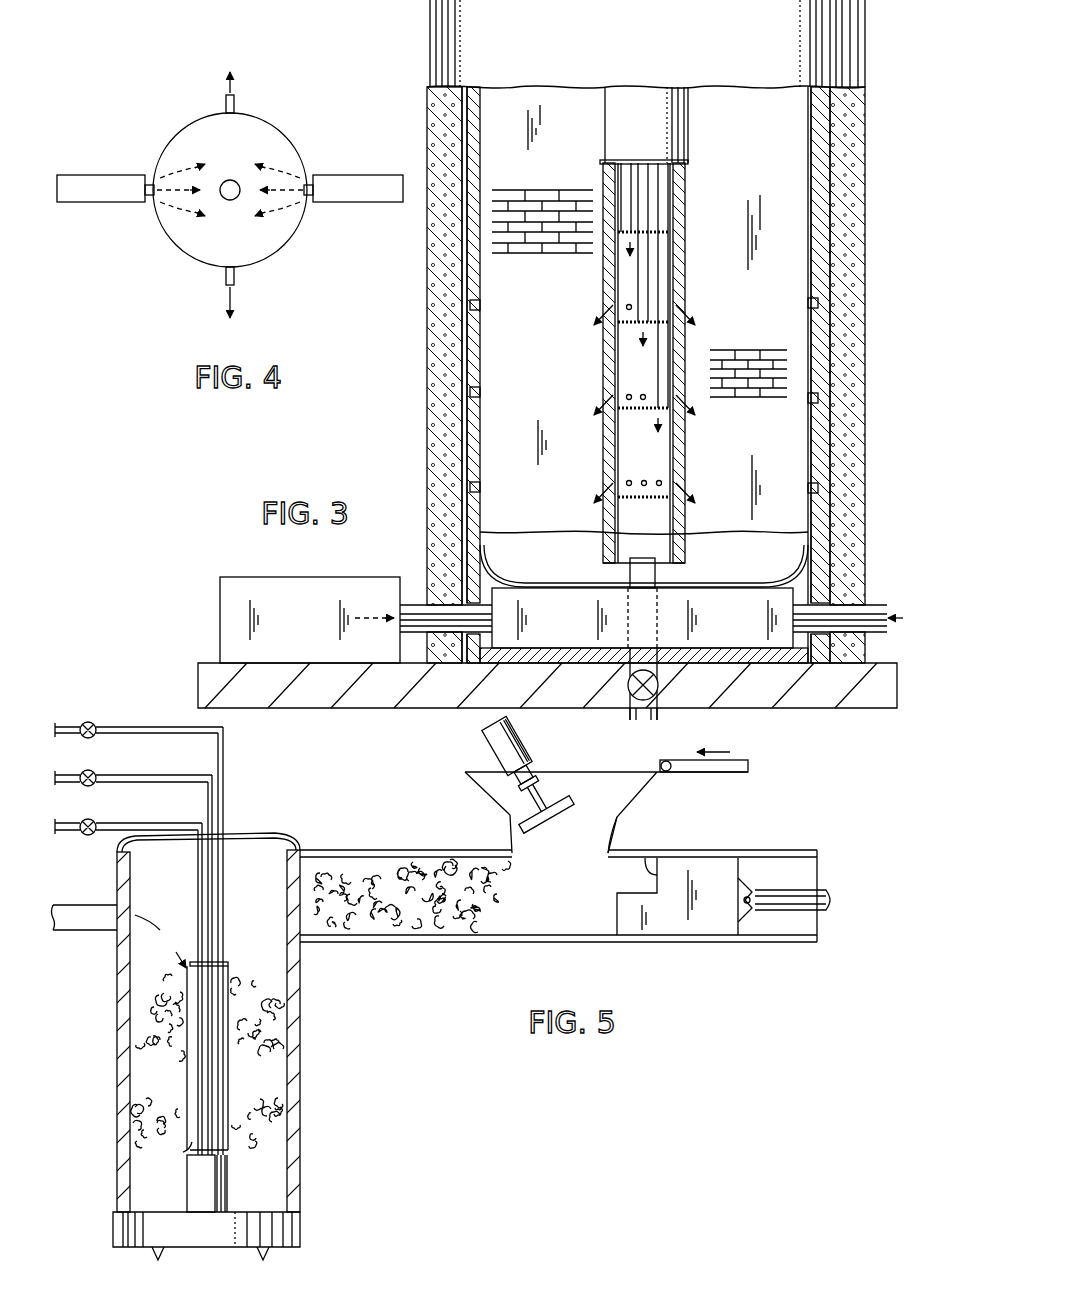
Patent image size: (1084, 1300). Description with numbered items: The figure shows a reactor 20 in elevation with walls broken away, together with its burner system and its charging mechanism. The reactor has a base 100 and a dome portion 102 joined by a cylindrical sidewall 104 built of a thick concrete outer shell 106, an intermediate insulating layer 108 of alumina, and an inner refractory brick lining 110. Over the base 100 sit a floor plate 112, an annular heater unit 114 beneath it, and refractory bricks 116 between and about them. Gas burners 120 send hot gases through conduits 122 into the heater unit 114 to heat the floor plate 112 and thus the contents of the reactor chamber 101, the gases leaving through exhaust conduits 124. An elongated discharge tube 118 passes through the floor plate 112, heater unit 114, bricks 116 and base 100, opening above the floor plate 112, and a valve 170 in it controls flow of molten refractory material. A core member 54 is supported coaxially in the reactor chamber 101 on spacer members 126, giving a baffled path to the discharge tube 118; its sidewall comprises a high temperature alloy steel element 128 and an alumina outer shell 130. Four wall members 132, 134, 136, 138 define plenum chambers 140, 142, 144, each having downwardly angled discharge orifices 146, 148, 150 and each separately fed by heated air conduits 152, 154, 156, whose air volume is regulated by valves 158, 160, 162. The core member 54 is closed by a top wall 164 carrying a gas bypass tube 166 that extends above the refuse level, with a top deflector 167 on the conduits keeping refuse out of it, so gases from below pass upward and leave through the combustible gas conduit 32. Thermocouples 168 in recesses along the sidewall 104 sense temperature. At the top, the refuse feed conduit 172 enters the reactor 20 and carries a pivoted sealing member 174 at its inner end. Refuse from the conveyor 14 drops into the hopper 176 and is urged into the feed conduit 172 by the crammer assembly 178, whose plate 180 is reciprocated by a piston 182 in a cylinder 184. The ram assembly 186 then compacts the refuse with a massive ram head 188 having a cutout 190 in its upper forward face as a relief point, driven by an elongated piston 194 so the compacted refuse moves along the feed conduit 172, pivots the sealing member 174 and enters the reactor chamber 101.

In FIG. 5, the conveyor 14 is at (733, 773).
In FIG. 3, the reactor 20 is at (872, 31).
In FIG. 5, the reactor 20 is at (302, 1011).
In FIG. 5, the combustible gas conduit 32 is at (78, 903).
In FIG. 3, the core member 54 is at (692, 109).
In FIG. 5, the core member 54 is at (229, 1183).
In FIG. 3, the base or platform portion 100 is at (862, 709).
In FIG. 3, the reactor chamber 101 is at (523, 361).
In FIG. 5, the reactor chamber 101 is at (143, 1070).
In FIG. 5, the dome portion 102 is at (278, 836).
In FIG. 3, the sidewall 104 is at (869, 162).
In FIG. 3, the concrete outer shell 106 is at (858, 197).
In FIG. 3, the insulating layer 108 is at (829, 147).
In FIG. 3, the refractory brick lining 110 is at (819, 183).
In FIG. 3, the floor plate 112 is at (517, 584).
In FIG. 3, the annular heater unit 114 is at (546, 621).
In FIG. 4, the annular heater unit 114 is at (285, 136).
In FIG. 3, the refractory bricks 116 is at (600, 667).
In FIG. 3, the discharge tube 118 is at (659, 679).
In FIG. 3, the gas burners 120 is at (266, 577).
In FIG. 4, the gas burners 120 is at (100, 175).
In FIG. 3, the conduits 122 is at (405, 604).
In FIG. 4, the exhaust conduits 124 is at (236, 103).
In FIG. 3, the spacer members 126 is at (607, 573).
In FIG. 3, the high temperature alloy steel element 128 is at (684, 177).
In FIG. 3, the alumina outer shell 130 is at (690, 193).
In FIG. 3, the wall member 132 is at (674, 238).
In FIG. 3, the wall member 134 is at (679, 340).
In FIG. 3, the wall member 136 is at (678, 430).
In FIG. 3, the wall member 138 is at (674, 512).
In FIG. 3, the plenum chamber 140 is at (629, 277).
In FIG. 3, the plenum chamber 142 is at (629, 368).
In FIG. 3, the plenum chamber 144 is at (629, 450).
In FIG. 3, the discharge orifices 146 is at (619, 300).
In FIG. 3, the discharge orifices 148 is at (619, 392).
In FIG. 3, the discharge orifices 150 is at (619, 472).
In FIG. 3, the heated air conduit 152 is at (632, 177).
In FIG. 5, the heated air conduit 152 is at (197, 858).
In FIG. 3, the heated air conduit 154 is at (645, 161).
In FIG. 5, the heated air conduit 154 is at (208, 884).
In FIG. 3, the heated air conduit 156 is at (673, 160).
In FIG. 5, the heated air conduit 156 is at (224, 874).
In FIG. 5, the valve 158 is at (85, 836).
In FIG. 5, the valve 160 is at (85, 787).
In FIG. 5, the valve 162 is at (84, 739).
In FIG. 5, the top wall 164 is at (233, 1156).
In FIG. 5, the gas bypass tube 166 is at (230, 1073).
In FIG. 5, the top deflector 167 is at (227, 961).
In FIG. 3, the thermocouples 168 is at (481, 305).
In FIG. 3, the valve 170 is at (629, 709).
In FIG. 5, the refuse feed conduit 172 is at (550, 943).
In FIG. 5, the sealing member 174 is at (289, 893).
In FIG. 5, the hopper 176 is at (622, 785).
In FIG. 5, the crammer assembly 178 is at (481, 742).
In FIG. 5, the plate 180 is at (512, 817).
In FIG. 5, the piston 182 is at (538, 790).
In FIG. 5, the cylinder 184 is at (518, 737).
In FIG. 5, the ram assembly 186 is at (748, 869).
In FIG. 5, the ram head 188 is at (720, 862).
In FIG. 5, the cutout 190 is at (648, 858).
In FIG. 5, the elongated piston 194 is at (824, 893).